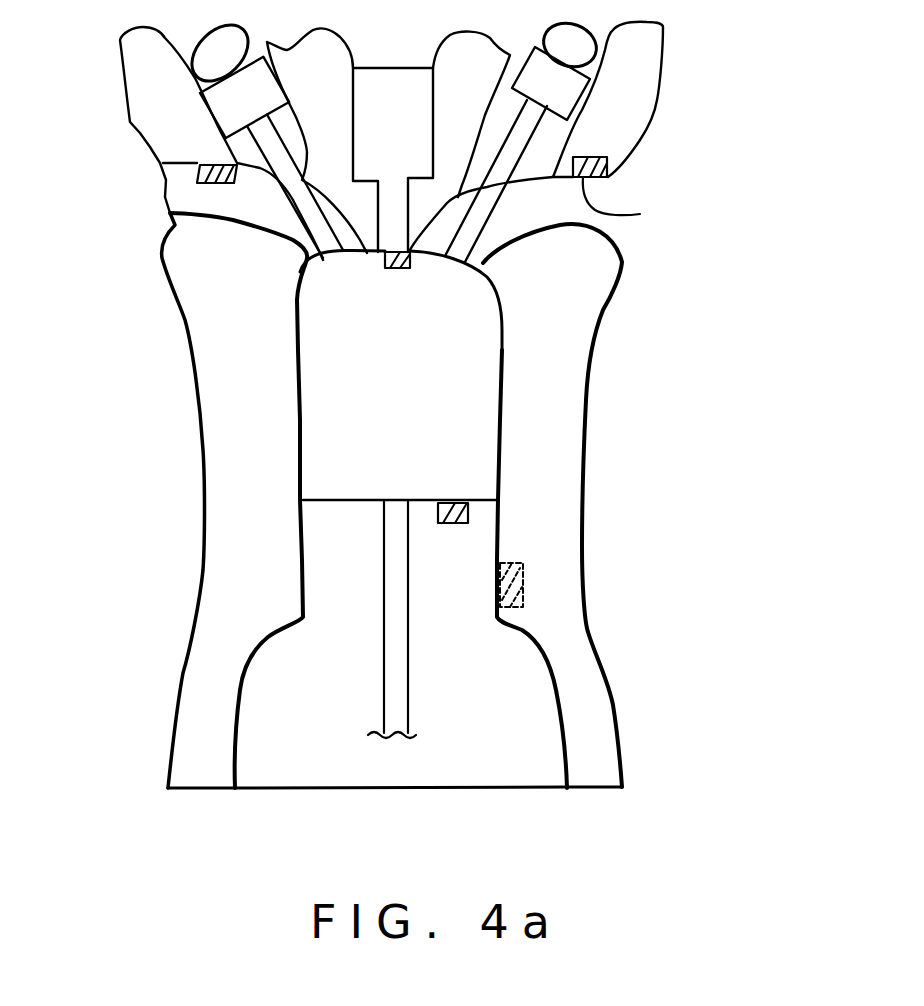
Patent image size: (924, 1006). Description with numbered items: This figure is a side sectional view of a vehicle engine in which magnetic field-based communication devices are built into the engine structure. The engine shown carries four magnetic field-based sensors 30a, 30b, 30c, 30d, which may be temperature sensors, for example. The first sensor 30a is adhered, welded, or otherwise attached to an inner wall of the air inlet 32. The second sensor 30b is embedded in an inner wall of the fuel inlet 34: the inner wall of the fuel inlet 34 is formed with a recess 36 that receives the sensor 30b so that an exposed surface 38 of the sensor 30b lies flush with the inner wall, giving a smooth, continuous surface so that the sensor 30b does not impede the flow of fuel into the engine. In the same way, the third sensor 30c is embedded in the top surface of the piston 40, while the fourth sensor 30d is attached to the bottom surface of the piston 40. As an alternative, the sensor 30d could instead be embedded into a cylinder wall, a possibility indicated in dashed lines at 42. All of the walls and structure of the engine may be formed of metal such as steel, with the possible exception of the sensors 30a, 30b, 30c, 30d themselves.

The magnetic field-based sensor 30a is at (219, 182).
The magnetic field-based sensor 30b is at (592, 157).
The magnetic field-based sensor 30c is at (400, 268).
The magnetic field-based sensor 30d is at (452, 500).
The air inlet 32 is at (183, 183).
The fuel inlet 34 is at (530, 215).
The recess 36 is at (645, 138).
The exposed surface 38 is at (640, 214).
The piston 40 is at (430, 404).
The alternative embedded sensor location in cylinder wall 42 is at (523, 583).